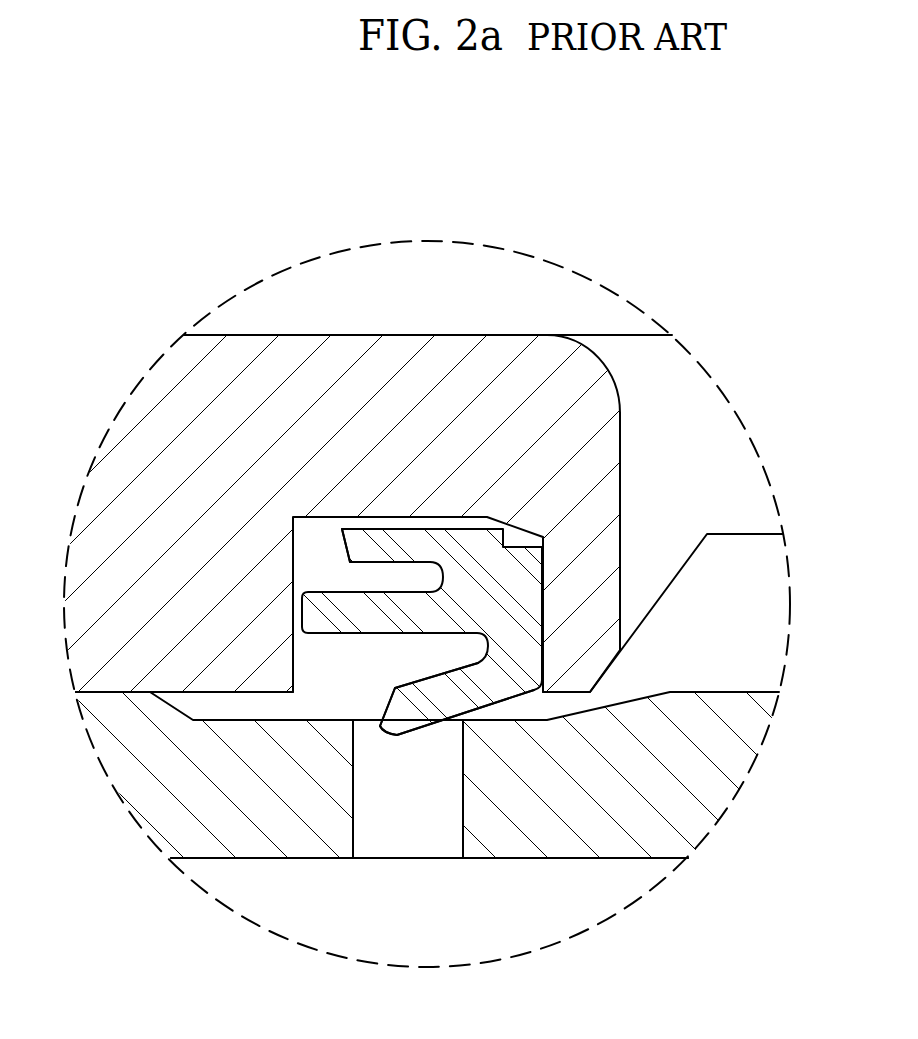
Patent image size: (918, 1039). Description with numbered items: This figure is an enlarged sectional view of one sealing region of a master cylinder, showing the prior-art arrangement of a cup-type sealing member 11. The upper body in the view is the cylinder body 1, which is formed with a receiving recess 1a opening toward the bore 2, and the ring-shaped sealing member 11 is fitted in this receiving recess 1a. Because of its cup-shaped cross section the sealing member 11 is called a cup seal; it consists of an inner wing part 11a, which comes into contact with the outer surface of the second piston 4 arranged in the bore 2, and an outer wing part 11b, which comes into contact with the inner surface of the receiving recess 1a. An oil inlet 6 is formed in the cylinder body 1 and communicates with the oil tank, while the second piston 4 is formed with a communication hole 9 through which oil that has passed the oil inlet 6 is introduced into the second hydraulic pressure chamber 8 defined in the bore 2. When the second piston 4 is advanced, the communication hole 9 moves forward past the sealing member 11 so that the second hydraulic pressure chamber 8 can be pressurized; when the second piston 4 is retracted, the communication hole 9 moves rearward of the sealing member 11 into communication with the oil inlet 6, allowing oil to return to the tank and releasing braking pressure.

The cylinder body 1 is at (205, 382).
The receiving recess 1a is at (313, 530).
The bore 2 is at (233, 691).
The second piston 4 is at (160, 827).
The oil inlet 6 is at (620, 502).
The second hydraulic pressure chamber 8 is at (280, 893).
The communication hole 9 is at (353, 828).
The sealing member 11 is at (449, 518).
The inner wing part 11a is at (473, 695).
The outer wing part 11b is at (382, 530).